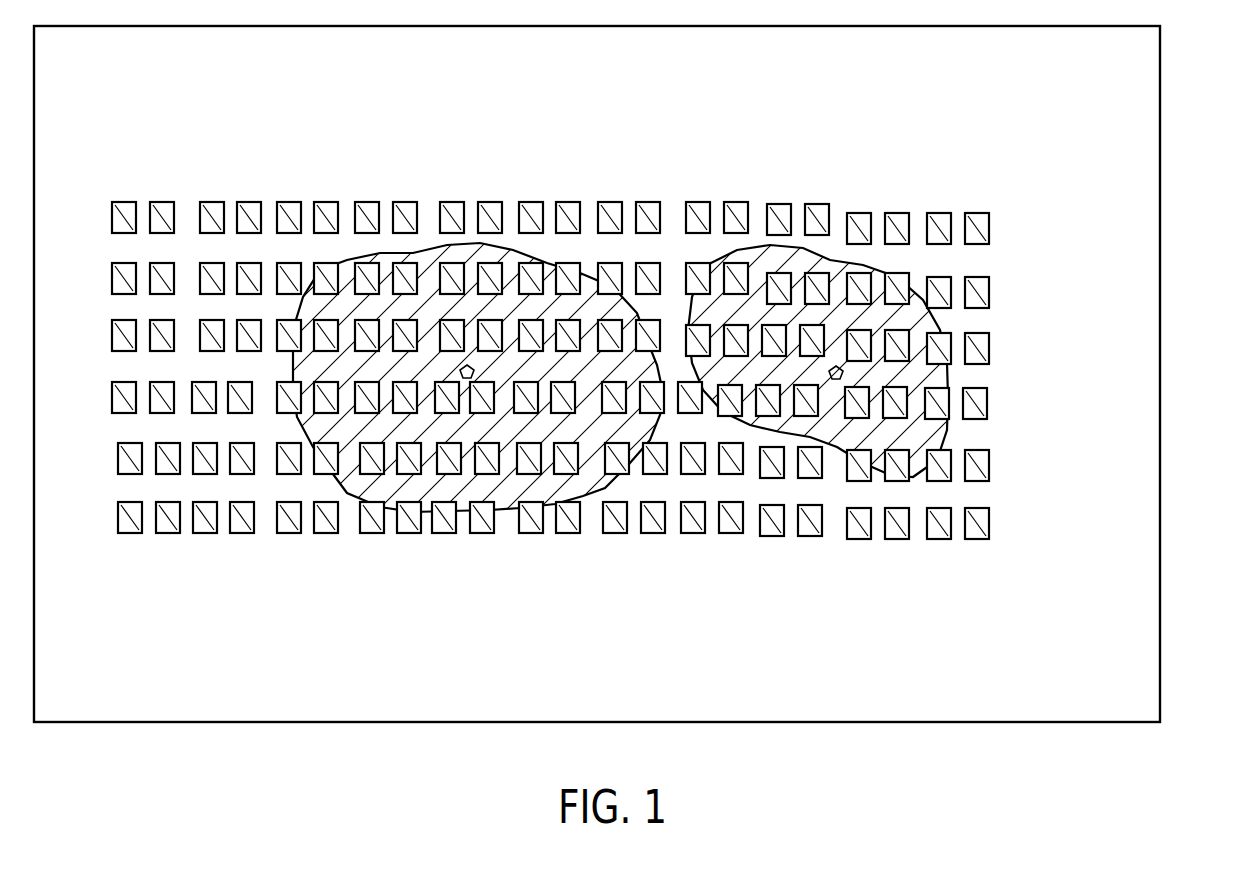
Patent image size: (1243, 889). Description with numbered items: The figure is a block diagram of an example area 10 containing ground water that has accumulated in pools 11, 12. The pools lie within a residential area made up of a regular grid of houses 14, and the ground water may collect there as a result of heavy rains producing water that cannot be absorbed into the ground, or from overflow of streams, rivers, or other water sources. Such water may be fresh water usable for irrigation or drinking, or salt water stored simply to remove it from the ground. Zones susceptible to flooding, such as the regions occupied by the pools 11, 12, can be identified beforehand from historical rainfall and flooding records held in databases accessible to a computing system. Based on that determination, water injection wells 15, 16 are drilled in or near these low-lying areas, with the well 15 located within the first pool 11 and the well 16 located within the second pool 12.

The area 10 is at (1160, 58).
The pool 11 is at (359, 483).
The pool 12 is at (782, 427).
The house 14 is at (250, 200).
The water injection well 15 is at (467, 366).
The water injection well 16 is at (833, 367).